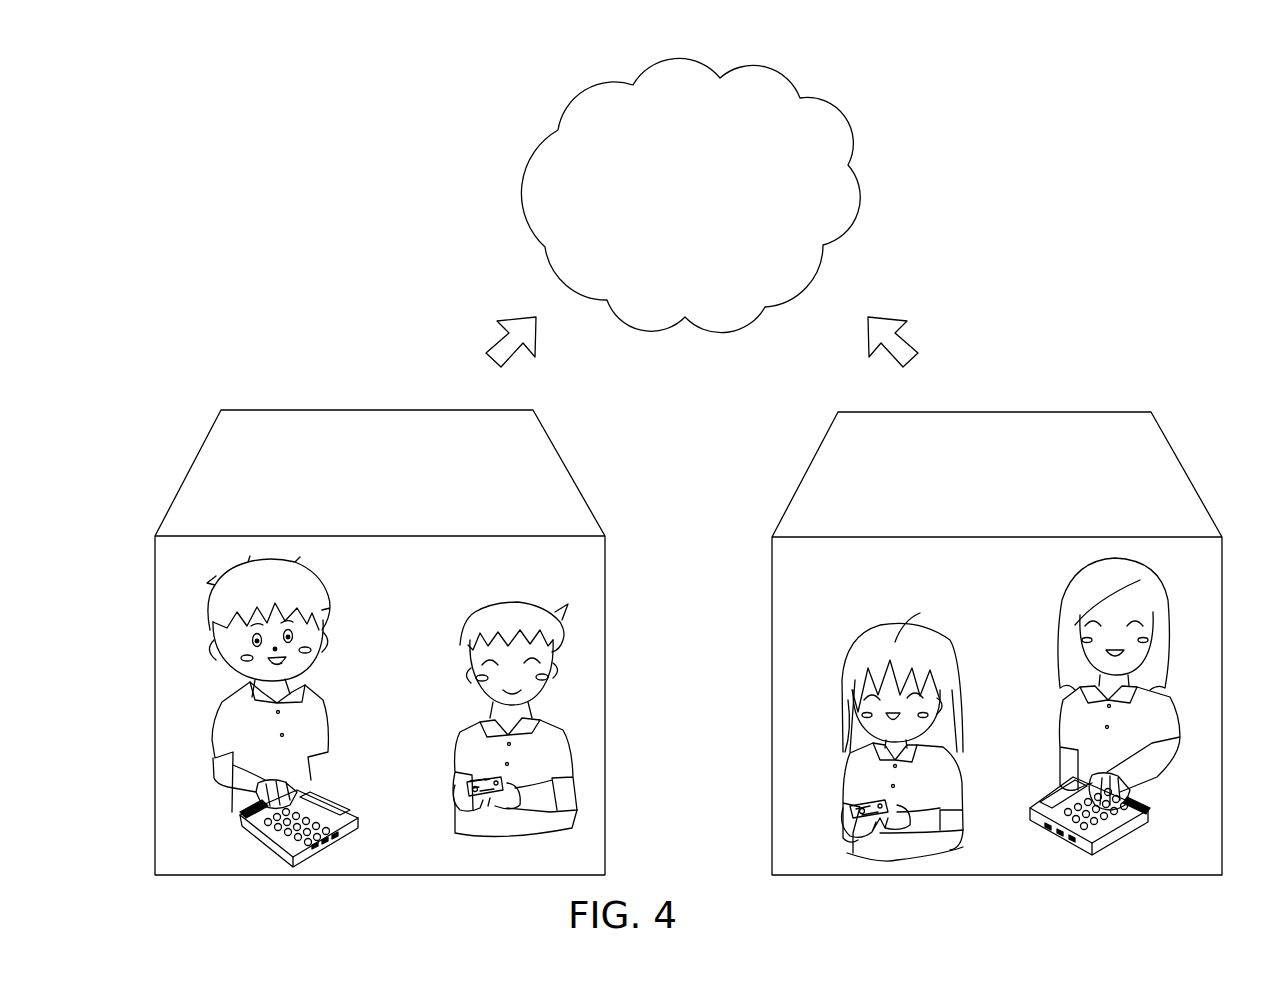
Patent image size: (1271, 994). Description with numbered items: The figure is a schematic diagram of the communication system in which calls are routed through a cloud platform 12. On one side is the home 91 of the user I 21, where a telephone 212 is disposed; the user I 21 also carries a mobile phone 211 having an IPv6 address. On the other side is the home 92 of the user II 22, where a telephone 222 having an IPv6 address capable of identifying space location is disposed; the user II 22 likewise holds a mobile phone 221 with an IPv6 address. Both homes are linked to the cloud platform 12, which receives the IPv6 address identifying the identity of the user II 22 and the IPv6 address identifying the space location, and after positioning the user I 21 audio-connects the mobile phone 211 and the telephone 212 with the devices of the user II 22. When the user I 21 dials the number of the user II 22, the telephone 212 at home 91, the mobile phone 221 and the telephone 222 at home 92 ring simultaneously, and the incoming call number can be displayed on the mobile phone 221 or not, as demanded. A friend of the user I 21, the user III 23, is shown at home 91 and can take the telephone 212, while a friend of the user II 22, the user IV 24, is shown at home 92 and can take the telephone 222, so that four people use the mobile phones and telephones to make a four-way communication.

The cloud platform 12 is at (843, 118).
The home of user I 91 is at (307, 423).
The home of user II 92 is at (1040, 425).
The user I 21 is at (522, 612).
The user II 22 is at (880, 642).
The user III 23 is at (293, 590).
The user IV 24 is at (1085, 590).
The mobile phone of user I 211 is at (482, 788).
The telephone of user I 212 is at (337, 797).
The mobile phone of user II 221 is at (867, 805).
The telephone of user II 222 is at (1057, 802).